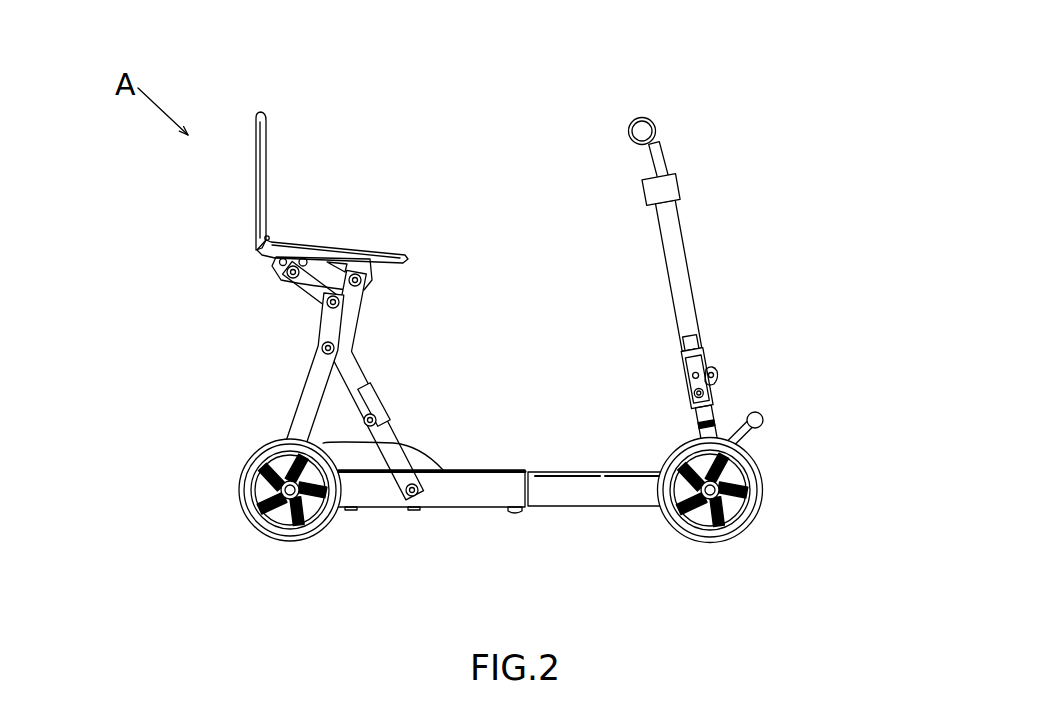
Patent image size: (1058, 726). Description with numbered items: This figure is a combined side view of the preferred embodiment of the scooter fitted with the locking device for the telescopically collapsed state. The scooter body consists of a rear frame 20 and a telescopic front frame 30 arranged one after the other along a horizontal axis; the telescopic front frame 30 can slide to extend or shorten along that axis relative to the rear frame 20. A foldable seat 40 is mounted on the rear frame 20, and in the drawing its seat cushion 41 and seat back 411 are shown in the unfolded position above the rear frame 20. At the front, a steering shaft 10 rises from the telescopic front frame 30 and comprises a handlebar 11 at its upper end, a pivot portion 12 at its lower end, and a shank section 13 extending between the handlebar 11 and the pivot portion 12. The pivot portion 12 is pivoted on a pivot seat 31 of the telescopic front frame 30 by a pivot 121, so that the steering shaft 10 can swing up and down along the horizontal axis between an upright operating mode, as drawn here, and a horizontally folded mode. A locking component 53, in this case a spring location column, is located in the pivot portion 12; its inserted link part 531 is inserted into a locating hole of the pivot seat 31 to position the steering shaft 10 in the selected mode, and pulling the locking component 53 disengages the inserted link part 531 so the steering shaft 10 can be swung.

The steering shaft 10 is at (716, 262).
The handlebar 11 is at (654, 121).
The pivot portion 12 is at (742, 361).
The pivot 121 is at (718, 382).
The shank section 13 is at (680, 273).
The rear frame 20 is at (460, 468).
The telescopic front frame 30 is at (570, 468).
The pivot seat 31 is at (690, 418).
The foldable seat 40 is at (353, 180).
The seat cushion 41 is at (320, 252).
The seat back 411 is at (268, 145).
The locking component 53 is at (690, 393).
The inserted link part 531 is at (693, 398).